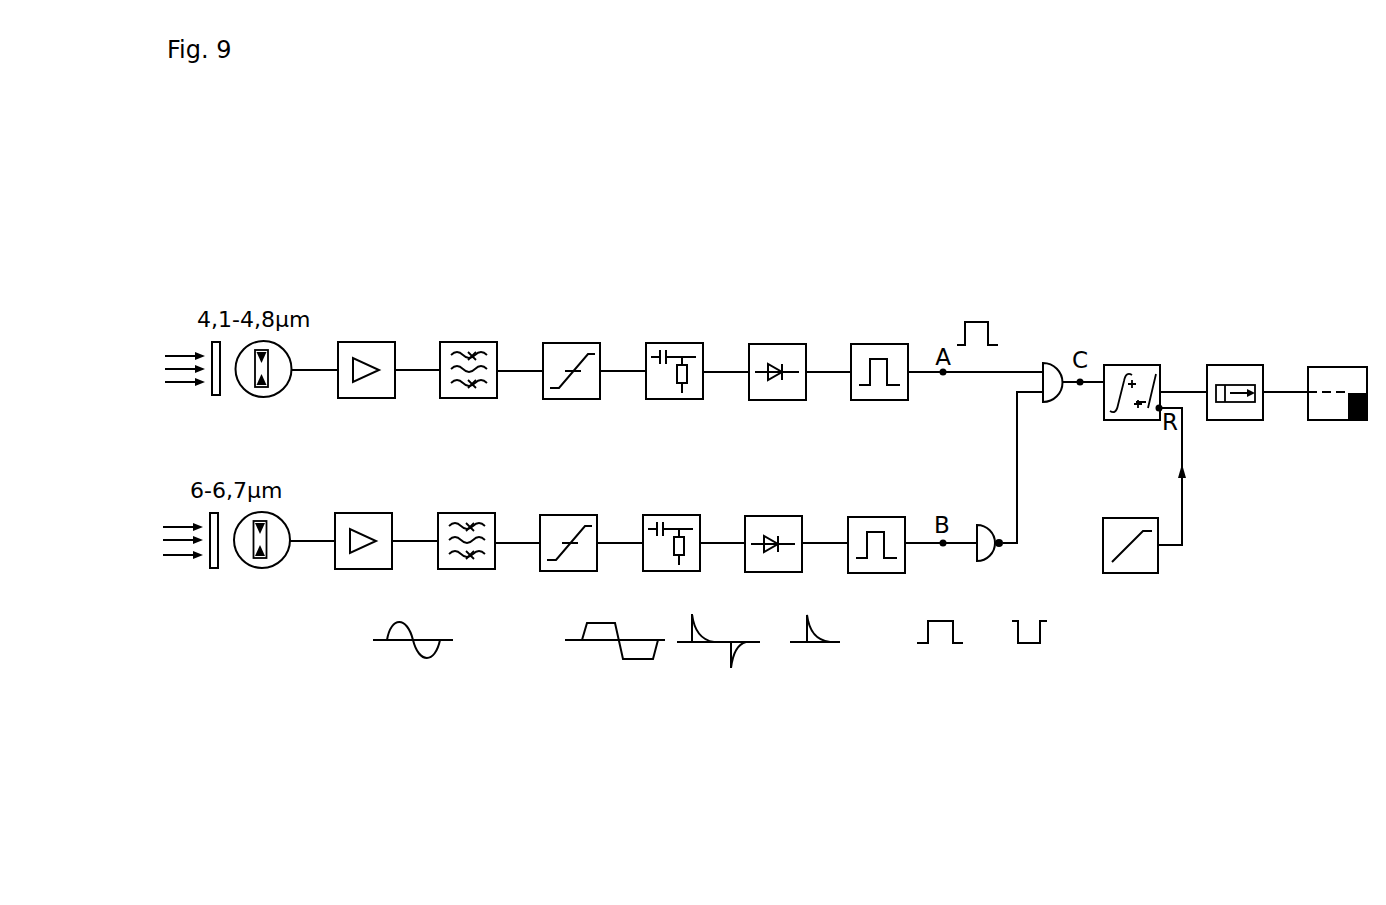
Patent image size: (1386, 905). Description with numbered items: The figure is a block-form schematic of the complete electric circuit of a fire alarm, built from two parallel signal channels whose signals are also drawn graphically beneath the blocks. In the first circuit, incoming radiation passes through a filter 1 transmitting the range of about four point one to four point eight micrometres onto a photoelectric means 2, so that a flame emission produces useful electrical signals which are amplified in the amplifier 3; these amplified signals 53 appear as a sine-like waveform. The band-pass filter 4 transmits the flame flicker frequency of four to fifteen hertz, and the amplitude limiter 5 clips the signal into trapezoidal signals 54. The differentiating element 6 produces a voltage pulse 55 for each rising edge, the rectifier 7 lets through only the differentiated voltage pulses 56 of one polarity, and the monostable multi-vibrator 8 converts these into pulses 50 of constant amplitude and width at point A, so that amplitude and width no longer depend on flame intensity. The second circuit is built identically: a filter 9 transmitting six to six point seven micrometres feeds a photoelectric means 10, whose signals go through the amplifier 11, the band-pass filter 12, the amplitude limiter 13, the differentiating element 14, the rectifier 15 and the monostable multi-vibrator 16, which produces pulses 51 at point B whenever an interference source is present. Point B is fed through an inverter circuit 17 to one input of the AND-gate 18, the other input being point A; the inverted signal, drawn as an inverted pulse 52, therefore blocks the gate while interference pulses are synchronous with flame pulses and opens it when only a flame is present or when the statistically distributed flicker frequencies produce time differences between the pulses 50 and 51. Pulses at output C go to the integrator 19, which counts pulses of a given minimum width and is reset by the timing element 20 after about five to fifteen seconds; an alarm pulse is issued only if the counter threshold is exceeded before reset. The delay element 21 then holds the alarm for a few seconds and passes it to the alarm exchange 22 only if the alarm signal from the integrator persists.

The filter 1 is at (217, 384).
The photoelectric means 2 is at (264, 384).
The amplifier 3 is at (366, 384).
The band-pass filter 4 is at (468, 385).
The amplitude limiter 5 is at (571, 385).
The differentiating element 6 is at (674, 385).
The rectifier 7 is at (777, 386).
The monostable multi-vibrator 8 is at (879, 386).
The filter 9 is at (212, 555).
The photoelectric means 10 is at (262, 555).
The amplifier 11 is at (363, 555).
The band-pass filter 12 is at (466, 555).
The amplitude limiter 13 is at (568, 558).
The differentiating element 14 is at (671, 558).
The rectifier 15 is at (773, 559).
The monostable multi-vibrator 16 is at (876, 559).
The inverter circuit 17 is at (988, 563).
The AND-gate 18 is at (1052, 397).
The integrator 19 is at (1132, 408).
The timing element 20 is at (1130, 531).
The delay element 21 is at (1235, 408).
The alarm exchange 22 is at (1337, 409).
The pulses 50 is at (977, 316).
The pulses 51 is at (940, 617).
The inverted pulse waveform 52 is at (1029, 653).
The amplified signals 53 is at (413, 657).
The trapezoidal signals 54 is at (615, 658).
The voltage pulse 55 is at (718, 653).
The differentiated voltage pulses 56 is at (815, 654).